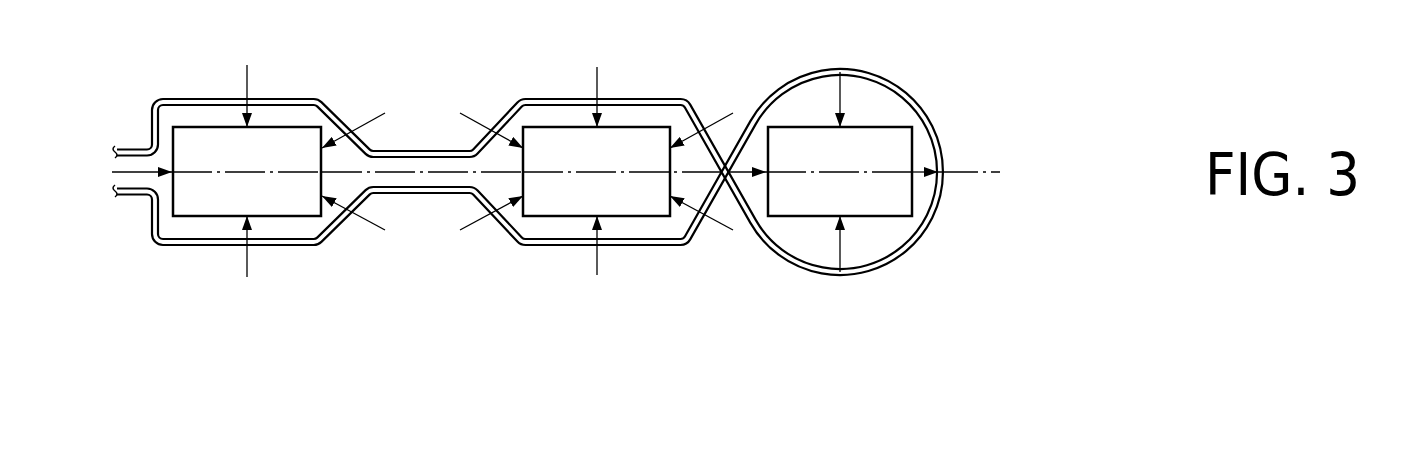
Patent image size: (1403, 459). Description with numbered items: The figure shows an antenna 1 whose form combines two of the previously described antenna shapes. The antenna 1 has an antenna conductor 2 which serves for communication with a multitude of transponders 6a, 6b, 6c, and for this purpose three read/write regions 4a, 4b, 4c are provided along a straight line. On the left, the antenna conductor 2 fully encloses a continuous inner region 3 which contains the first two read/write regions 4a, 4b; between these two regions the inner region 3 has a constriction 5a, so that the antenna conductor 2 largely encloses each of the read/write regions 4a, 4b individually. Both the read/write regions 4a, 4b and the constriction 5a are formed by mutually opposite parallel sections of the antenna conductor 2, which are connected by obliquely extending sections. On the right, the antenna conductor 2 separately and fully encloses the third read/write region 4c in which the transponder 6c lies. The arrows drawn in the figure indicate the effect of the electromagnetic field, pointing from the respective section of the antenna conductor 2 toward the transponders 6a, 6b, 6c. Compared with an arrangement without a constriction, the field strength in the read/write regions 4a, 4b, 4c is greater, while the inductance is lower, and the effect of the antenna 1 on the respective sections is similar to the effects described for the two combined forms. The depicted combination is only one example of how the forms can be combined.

The antenna 1 is at (745, 73).
The antenna conductor 2 is at (333, 238).
The continuous inner region 3 is at (543, 112).
The read/write region 4a is at (217, 232).
The read/write region 4b is at (567, 230).
The read/write region 4c is at (812, 237).
The constriction 5a is at (402, 176).
The transponder 6a is at (267, 208).
The transponder 6b is at (615, 208).
The transponder 6c is at (858, 203).